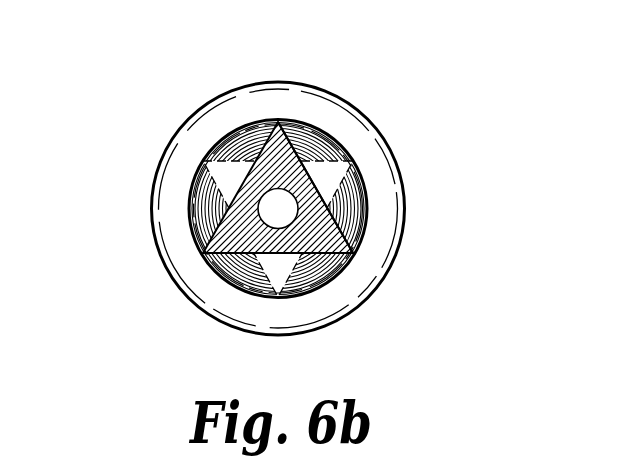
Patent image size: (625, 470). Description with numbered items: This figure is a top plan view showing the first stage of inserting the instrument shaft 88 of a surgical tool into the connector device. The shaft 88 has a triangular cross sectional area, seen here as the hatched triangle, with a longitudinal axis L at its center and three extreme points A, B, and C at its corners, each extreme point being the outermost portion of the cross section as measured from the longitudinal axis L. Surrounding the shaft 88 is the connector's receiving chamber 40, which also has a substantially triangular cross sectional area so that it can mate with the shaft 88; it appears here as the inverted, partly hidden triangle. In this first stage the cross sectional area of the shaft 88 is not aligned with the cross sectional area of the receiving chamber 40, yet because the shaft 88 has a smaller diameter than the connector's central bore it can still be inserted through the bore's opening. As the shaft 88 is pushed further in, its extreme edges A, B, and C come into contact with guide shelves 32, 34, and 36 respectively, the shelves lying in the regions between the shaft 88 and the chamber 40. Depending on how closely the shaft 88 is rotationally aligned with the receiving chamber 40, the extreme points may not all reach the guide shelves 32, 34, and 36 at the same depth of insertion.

The guide shelf 32 is at (242, 140).
The guide shelf 34 is at (194, 244).
The guide shelf 36 is at (359, 206).
The receiving chamber 40 is at (332, 162).
The instrument shaft 88 is at (214, 160).
The extreme point A is at (279, 121).
The extreme point B is at (202, 254).
The extreme point C is at (356, 254).
The longitudinal axis L is at (278, 209).